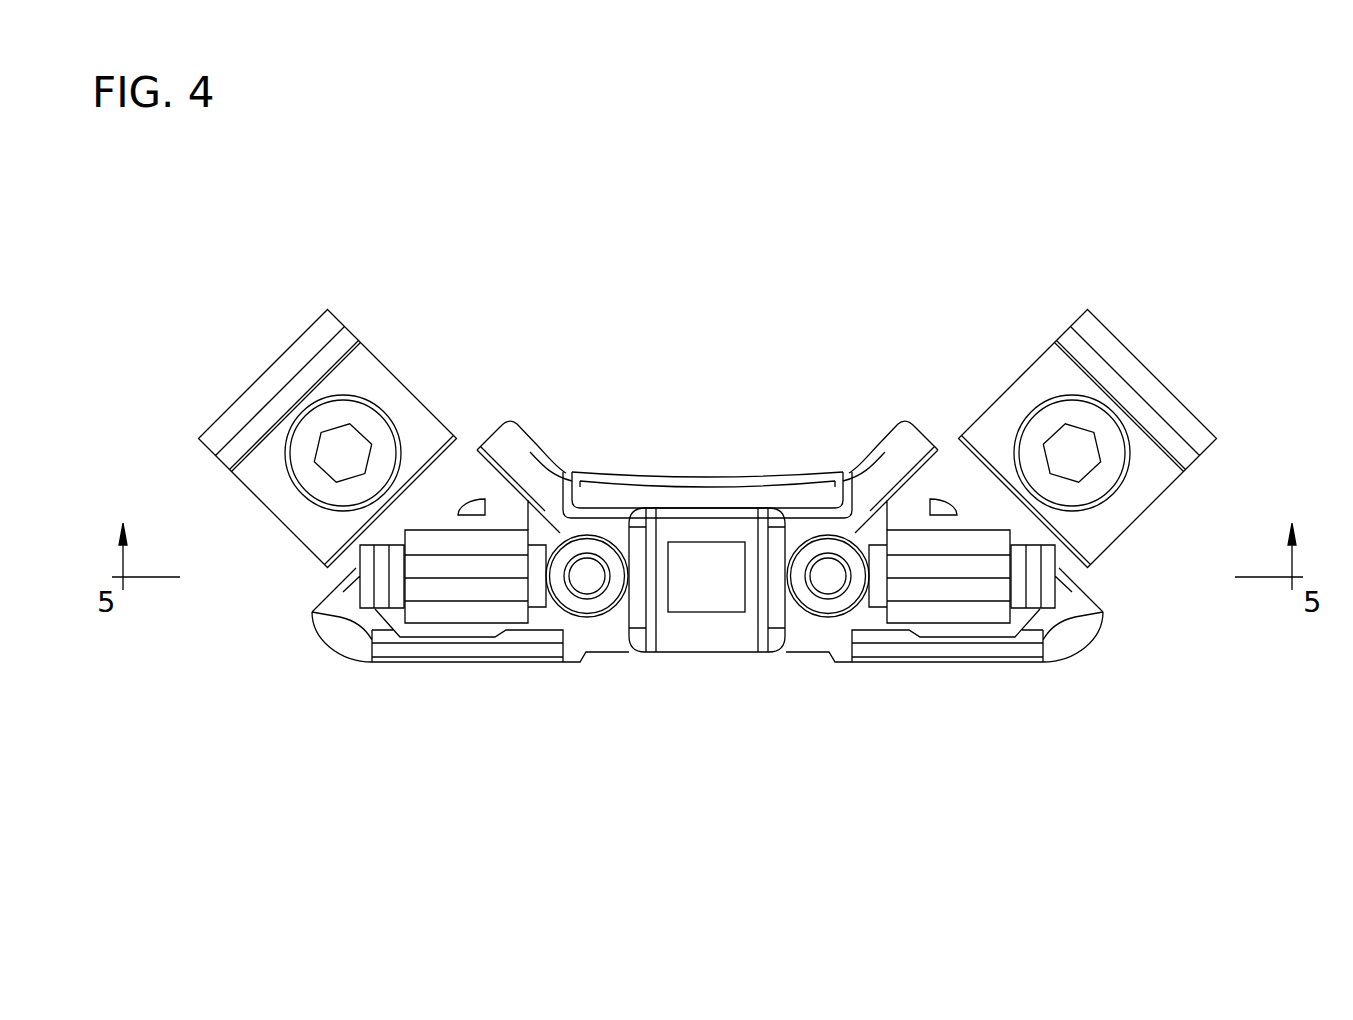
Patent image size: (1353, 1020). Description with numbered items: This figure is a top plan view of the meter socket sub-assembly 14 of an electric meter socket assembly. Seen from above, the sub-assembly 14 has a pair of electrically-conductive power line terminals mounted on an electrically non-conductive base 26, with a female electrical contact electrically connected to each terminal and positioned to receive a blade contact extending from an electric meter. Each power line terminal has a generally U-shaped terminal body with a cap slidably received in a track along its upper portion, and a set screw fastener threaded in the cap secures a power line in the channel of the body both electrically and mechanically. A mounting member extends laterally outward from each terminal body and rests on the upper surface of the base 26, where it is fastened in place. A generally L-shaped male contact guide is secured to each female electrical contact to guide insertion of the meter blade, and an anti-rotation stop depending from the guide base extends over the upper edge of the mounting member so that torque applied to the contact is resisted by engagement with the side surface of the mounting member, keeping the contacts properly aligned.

The meter socket sub-assembly 14 is at (963, 243).
The base 26 is at (713, 488).